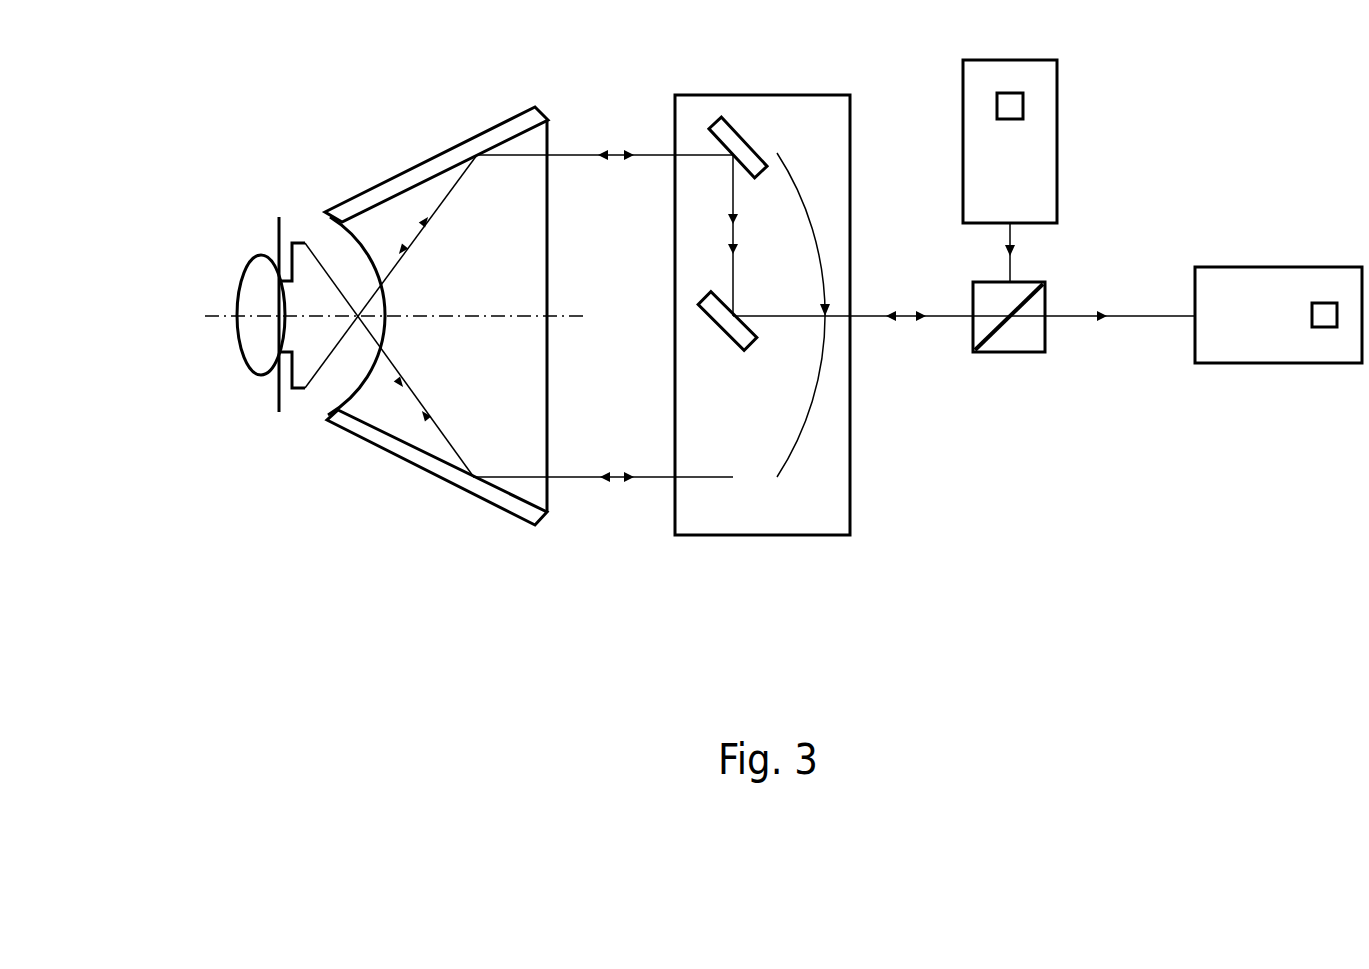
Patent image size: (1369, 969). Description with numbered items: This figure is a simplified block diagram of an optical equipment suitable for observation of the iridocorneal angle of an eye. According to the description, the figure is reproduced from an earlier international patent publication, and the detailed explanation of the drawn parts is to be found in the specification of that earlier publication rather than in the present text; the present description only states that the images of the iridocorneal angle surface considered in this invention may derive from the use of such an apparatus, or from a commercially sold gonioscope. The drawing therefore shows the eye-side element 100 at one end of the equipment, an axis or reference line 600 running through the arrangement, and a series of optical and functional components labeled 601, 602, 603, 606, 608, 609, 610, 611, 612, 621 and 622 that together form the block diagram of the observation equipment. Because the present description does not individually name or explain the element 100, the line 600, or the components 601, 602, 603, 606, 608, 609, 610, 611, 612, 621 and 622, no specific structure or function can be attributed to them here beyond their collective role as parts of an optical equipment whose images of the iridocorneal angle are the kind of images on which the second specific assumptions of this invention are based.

The eye 100 is at (222, 283).
The optical axis 600 is at (419, 315).
The light source unit 601 is at (1023, 172).
The detector unit 602 is at (1228, 338).
The measurement light beam 603 is at (556, 236).
The lens 606 is at (517, 388).
The mirror 608 is at (362, 205).
The beam splitter 609 is at (1018, 332).
The scanning unit 610 is at (707, 517).
The light source 611 is at (1010, 108).
The detector 612 is at (1322, 314).
The scanning mirror 621 is at (737, 355).
The scanning mirror 622 is at (742, 130).